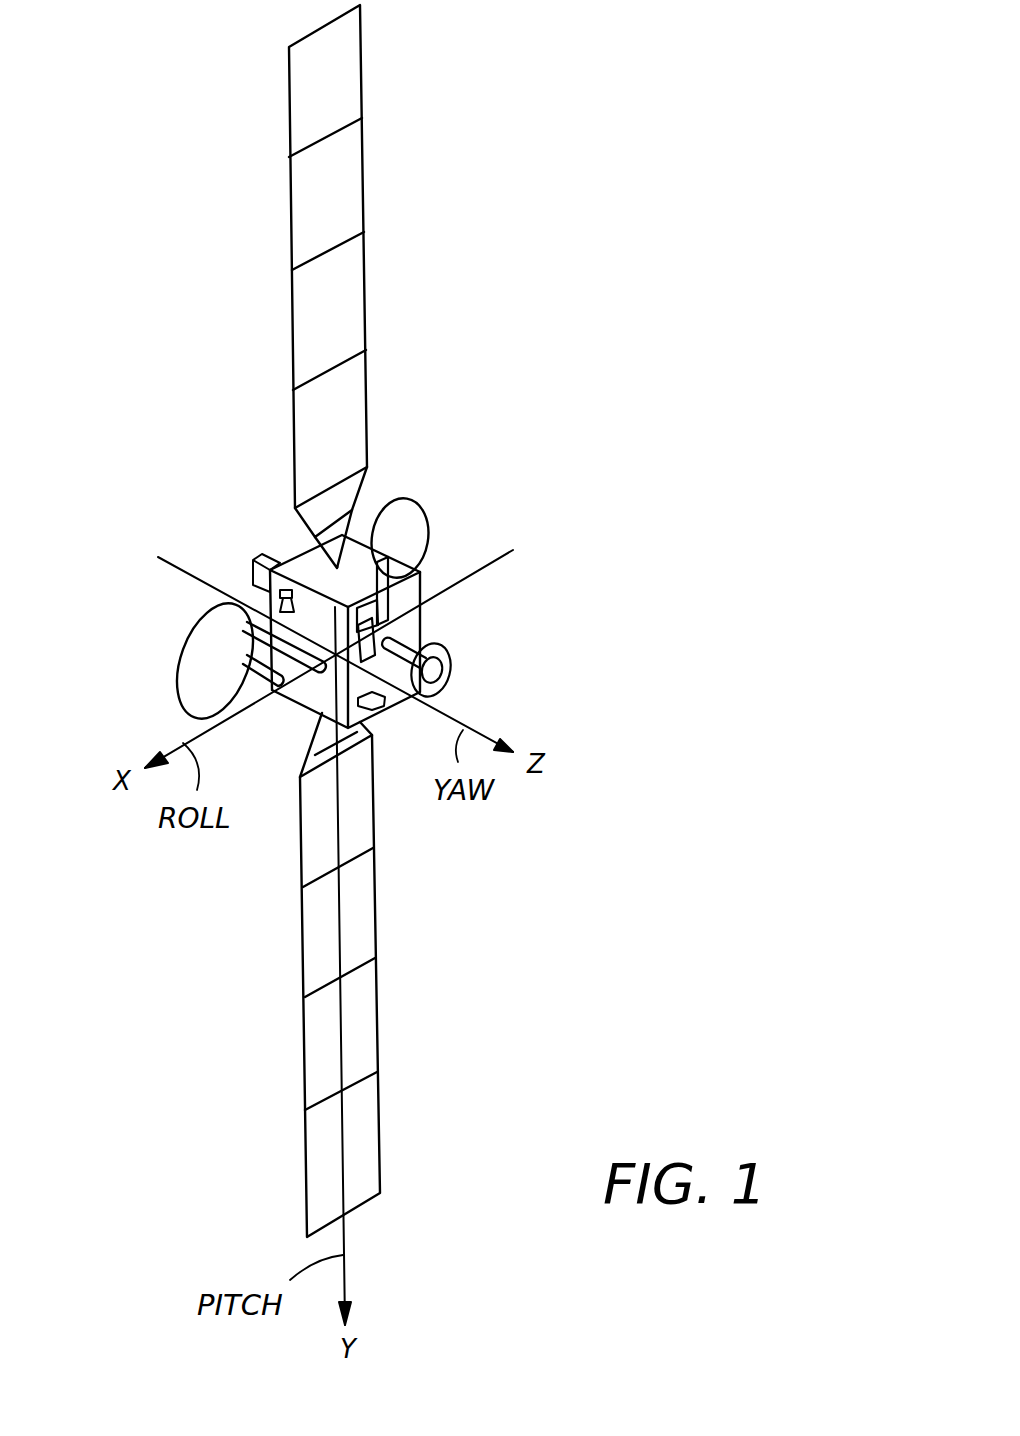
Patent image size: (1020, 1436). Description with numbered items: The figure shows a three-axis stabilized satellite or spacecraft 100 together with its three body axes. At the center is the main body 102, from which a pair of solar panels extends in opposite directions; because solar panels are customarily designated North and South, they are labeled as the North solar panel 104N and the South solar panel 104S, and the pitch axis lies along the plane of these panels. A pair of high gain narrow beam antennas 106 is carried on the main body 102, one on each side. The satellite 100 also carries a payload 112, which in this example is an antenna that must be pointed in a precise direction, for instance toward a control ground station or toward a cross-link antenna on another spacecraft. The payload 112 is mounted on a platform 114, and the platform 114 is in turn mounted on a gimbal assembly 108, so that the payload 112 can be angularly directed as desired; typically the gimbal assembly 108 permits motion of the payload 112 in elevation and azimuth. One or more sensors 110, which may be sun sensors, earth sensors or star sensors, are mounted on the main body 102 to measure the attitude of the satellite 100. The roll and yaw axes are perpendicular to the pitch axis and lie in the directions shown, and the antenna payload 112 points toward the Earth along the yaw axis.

The spacecraft 100 is at (447, 239).
The main body 102 is at (423, 620).
The North solar panel 104N is at (342, 188).
The South solar panel 104S is at (367, 1022).
The high gain narrow beam antenna 106 is at (202, 642).
The gimbal assembly 108 is at (417, 637).
The sensor 110 is at (280, 553).
The payload 112 is at (443, 667).
The platform 114 is at (433, 693).